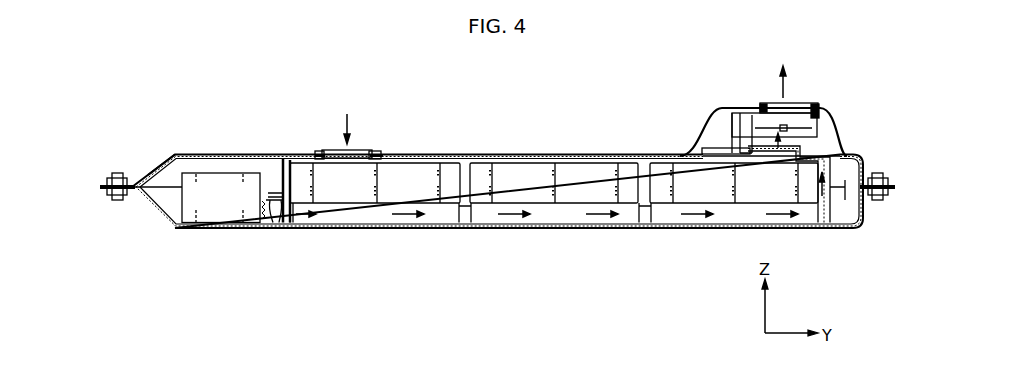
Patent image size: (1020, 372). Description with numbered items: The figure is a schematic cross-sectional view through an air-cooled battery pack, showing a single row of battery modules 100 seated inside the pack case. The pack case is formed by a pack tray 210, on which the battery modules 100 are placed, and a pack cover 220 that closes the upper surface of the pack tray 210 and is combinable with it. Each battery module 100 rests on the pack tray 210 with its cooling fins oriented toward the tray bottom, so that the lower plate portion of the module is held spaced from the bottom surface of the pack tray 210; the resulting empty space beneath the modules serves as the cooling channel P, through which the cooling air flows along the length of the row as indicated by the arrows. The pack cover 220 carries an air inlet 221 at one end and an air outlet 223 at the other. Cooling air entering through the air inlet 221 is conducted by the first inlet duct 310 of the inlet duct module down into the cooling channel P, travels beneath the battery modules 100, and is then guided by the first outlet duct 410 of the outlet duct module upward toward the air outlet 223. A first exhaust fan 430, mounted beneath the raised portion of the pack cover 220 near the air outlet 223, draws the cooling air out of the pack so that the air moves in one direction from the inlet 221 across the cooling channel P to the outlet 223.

The battery module 100 is at (429, 172).
The pack tray 210 is at (155, 210).
The pack cover 220 is at (158, 167).
The air inlet 221 is at (335, 151).
The air outlet 223 is at (768, 105).
The first inlet duct 310 is at (280, 222).
The first outlet duct 410 is at (834, 216).
The first exhaust fan 430 is at (806, 110).
The cooling channel P is at (376, 216).